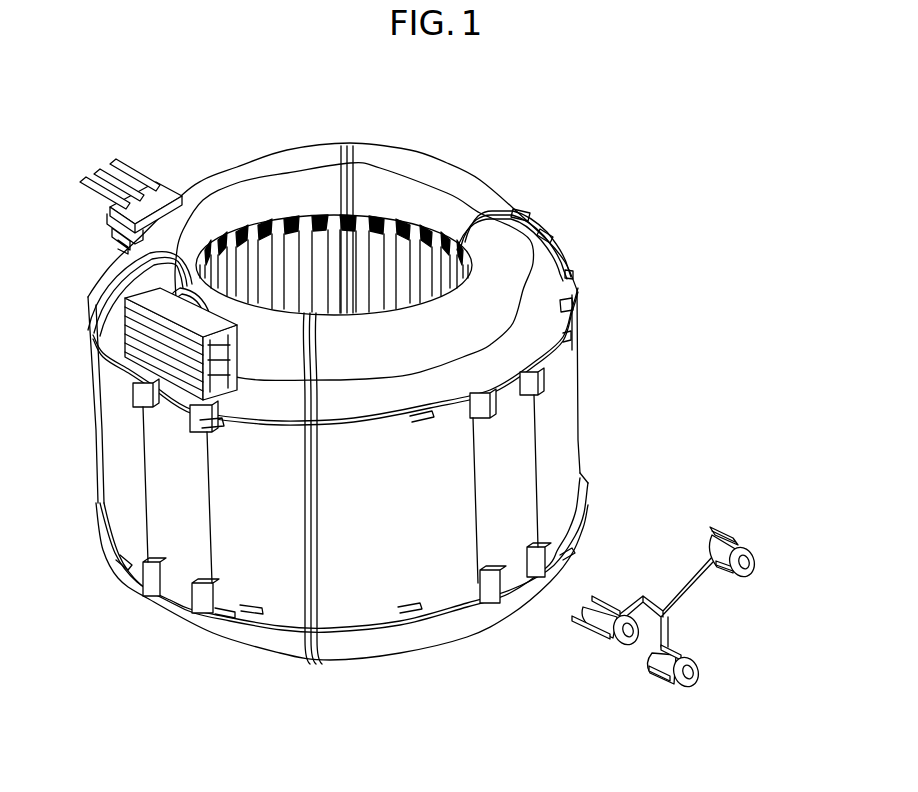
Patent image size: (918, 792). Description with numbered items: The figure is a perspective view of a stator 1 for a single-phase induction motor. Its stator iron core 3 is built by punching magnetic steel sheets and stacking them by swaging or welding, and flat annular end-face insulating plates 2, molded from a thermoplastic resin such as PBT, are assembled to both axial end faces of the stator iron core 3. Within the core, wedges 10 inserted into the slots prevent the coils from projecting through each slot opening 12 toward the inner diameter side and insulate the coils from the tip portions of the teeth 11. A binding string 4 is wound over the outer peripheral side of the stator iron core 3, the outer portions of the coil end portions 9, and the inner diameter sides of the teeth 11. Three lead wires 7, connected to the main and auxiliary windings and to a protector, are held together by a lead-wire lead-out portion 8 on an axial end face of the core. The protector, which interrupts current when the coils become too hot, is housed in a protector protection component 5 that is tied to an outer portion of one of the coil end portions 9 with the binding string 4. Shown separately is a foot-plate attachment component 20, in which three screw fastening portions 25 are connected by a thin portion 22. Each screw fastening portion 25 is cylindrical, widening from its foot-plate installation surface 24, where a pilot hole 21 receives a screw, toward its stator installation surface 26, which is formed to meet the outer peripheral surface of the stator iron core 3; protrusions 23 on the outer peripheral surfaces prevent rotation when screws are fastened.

The stator 1 is at (641, 118).
The end-face insulating plates 2 is at (566, 291).
The stator iron core 3 is at (560, 421).
The binding string 4 is at (300, 486).
The protector protection component 5 is at (140, 338).
The lead wires 7 is at (118, 167).
The lead-wire lead-out portion 8 is at (150, 190).
The coil end portions 9 is at (412, 163).
The wedge 10 is at (448, 240).
The teeth 11 is at (297, 265).
The slot opening 12 is at (282, 290).
The foot-plate attachment component 20 is at (660, 688).
The pilot hole 21 is at (698, 676).
The thin portion 22 is at (682, 600).
The protrusions 23 is at (720, 528).
The foot-plate installation surface 24 is at (760, 556).
The screw fastening portions 25 is at (748, 548).
The stator installation surface 26 is at (713, 548).